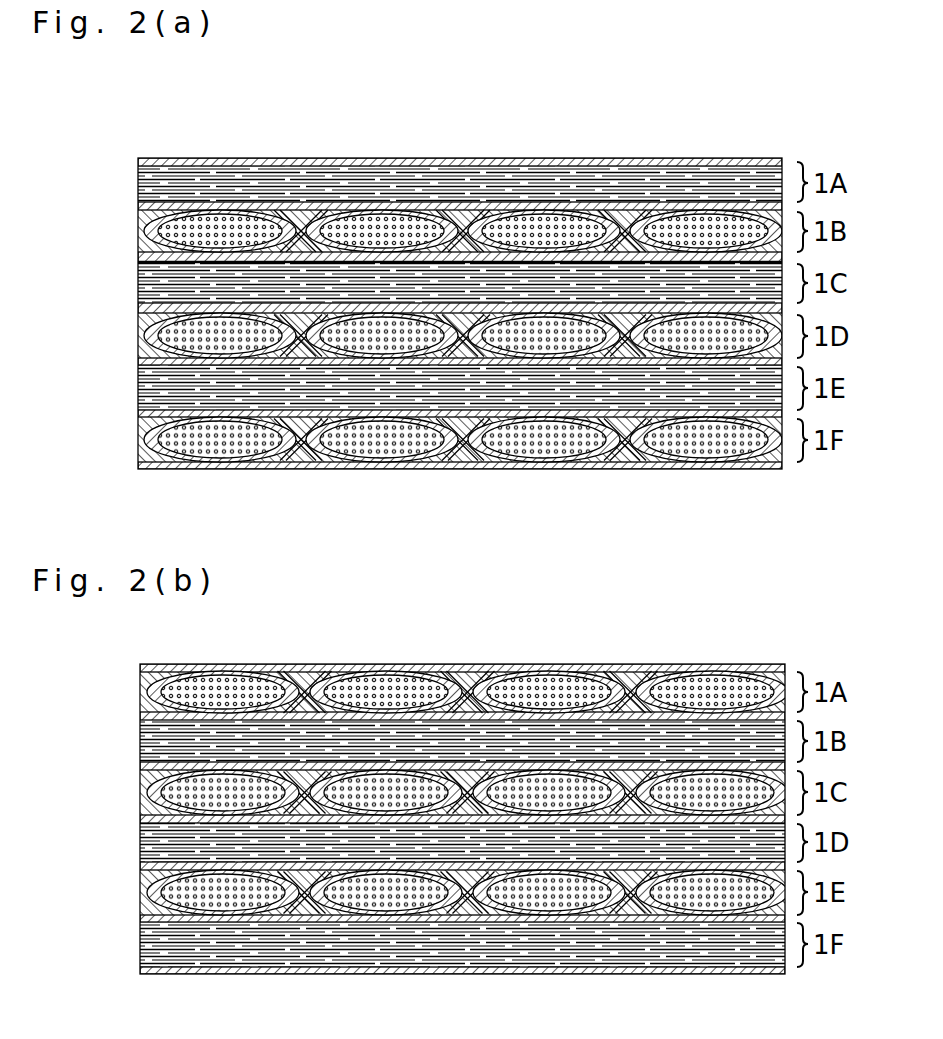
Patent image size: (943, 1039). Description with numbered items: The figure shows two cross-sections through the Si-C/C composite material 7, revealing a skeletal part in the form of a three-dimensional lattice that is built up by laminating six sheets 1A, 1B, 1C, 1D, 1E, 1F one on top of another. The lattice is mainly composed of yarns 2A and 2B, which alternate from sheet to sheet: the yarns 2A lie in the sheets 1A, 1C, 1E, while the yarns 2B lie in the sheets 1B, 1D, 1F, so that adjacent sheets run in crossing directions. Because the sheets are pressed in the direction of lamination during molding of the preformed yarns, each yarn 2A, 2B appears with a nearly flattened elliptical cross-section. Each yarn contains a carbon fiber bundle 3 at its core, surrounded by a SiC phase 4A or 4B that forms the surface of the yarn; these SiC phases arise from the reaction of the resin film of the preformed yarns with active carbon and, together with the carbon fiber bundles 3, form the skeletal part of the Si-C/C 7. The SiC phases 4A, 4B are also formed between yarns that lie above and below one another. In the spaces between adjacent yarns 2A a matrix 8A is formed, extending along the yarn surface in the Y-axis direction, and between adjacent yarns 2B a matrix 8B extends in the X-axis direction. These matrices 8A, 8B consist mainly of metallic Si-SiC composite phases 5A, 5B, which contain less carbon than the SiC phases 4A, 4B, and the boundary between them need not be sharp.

In FIG. 2A, the sheet 1A is at (460, 154).
In FIG. 2B, the sheet 1A is at (434, 672).
In FIG. 2A, the sheet 1B is at (435, 179).
In FIG. 2B, the sheet 1B is at (432, 741).
In FIG. 2A, the sheet 1C is at (460, 282).
In FIG. 2B, the sheet 1C is at (464, 792).
In FIG. 2A, the sheet 1D is at (460, 335).
In FIG. 2B, the sheet 1D is at (462, 842).
In FIG. 2A, the sheet 1E is at (460, 387).
In FIG. 2B, the sheet 1E is at (464, 892).
In FIG. 2A, the sheet 1F is at (460, 439).
In FIG. 2B, the sheet 1F is at (462, 944).
In FIG. 2A, the yarn 2A is at (233, 188).
In FIG. 2B, the yarn 2A is at (185, 693).
In FIG. 2A, the yarn 2B is at (183, 239).
In FIG. 2B, the yarn 2B is at (139, 739).
In FIG. 2A, the carbon fiber bundle 3 is at (379, 220).
In FIG. 2B, the carbon fiber bundle 3 is at (395, 735).
In FIG. 2A, the SiC phase 4A is at (173, 160).
In FIG. 2B, the SiC phase 4A is at (266, 664).
In FIG. 2A, the SiC phase 4B is at (140, 318).
In FIG. 2B, the metallic Si-SiC composite phase 5A is at (306, 690).
In FIG. 2A, the metallic Si-SiC composite phase 5B is at (300, 214).
In FIG. 2A, the Si-C/C 7 is at (443, 275).
In FIG. 2B, the Si-C/C 7 is at (434, 776).
In FIG. 2B, the matrix 8A is at (488, 666).
In FIG. 2A, the matrix 8B is at (492, 205).